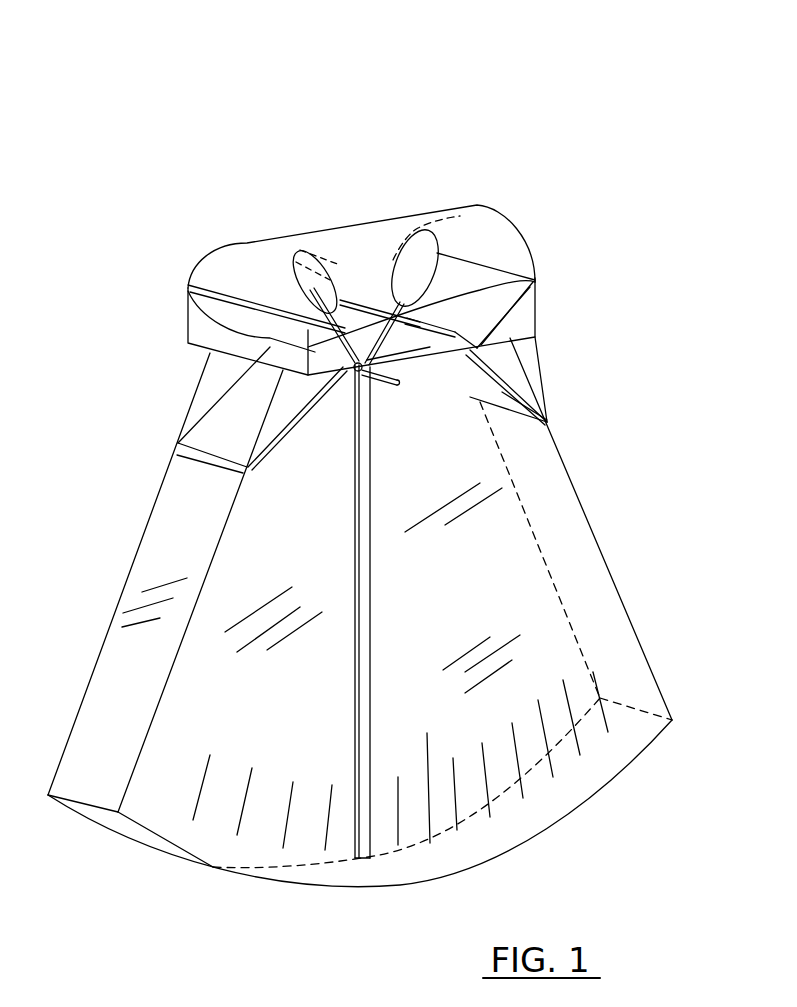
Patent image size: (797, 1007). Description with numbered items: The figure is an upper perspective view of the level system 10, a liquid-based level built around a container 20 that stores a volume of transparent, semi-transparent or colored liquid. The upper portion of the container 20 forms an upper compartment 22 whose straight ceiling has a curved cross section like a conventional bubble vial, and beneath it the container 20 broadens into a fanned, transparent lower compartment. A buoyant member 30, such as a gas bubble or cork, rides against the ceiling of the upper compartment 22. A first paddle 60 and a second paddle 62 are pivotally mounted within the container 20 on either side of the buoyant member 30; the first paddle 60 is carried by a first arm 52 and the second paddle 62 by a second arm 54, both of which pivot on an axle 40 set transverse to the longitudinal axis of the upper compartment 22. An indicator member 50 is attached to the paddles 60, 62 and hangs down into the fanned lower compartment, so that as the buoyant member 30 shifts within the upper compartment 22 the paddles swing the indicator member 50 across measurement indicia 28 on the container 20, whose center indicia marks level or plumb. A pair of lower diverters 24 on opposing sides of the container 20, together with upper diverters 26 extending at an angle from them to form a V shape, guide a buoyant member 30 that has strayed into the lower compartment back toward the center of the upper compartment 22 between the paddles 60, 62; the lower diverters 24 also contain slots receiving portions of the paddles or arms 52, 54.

The level system 10 is at (595, 93).
The container 20 is at (590, 503).
The upper compartment 22 is at (217, 254).
The lower diverters 24 is at (538, 402).
The upper diverters 26 is at (485, 302).
The measurement indicia 28 is at (212, 783).
The buoyant member 30 is at (410, 223).
The axle 40 is at (378, 393).
The indicator member 50 is at (367, 625).
The first arm 52 is at (445, 300).
The second arm 54 is at (303, 317).
The first paddle 60 is at (510, 230).
The second paddle 62 is at (296, 265).